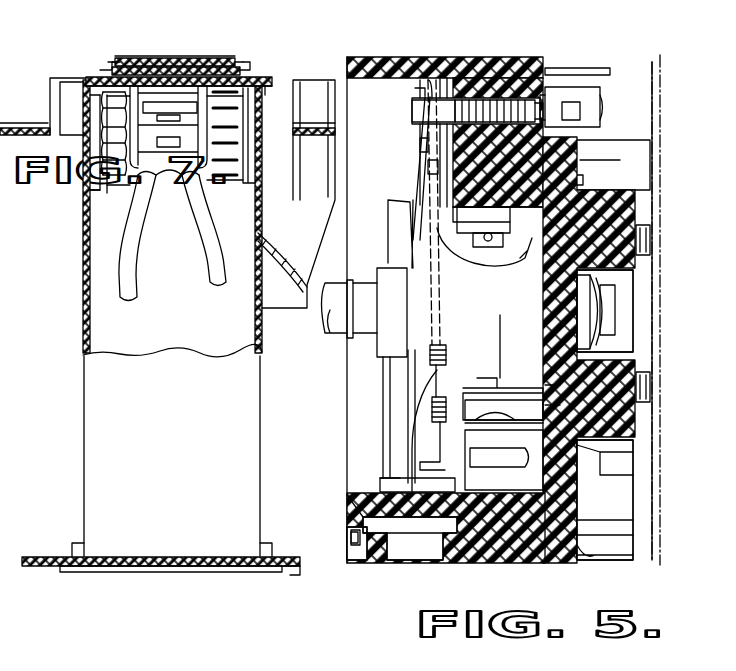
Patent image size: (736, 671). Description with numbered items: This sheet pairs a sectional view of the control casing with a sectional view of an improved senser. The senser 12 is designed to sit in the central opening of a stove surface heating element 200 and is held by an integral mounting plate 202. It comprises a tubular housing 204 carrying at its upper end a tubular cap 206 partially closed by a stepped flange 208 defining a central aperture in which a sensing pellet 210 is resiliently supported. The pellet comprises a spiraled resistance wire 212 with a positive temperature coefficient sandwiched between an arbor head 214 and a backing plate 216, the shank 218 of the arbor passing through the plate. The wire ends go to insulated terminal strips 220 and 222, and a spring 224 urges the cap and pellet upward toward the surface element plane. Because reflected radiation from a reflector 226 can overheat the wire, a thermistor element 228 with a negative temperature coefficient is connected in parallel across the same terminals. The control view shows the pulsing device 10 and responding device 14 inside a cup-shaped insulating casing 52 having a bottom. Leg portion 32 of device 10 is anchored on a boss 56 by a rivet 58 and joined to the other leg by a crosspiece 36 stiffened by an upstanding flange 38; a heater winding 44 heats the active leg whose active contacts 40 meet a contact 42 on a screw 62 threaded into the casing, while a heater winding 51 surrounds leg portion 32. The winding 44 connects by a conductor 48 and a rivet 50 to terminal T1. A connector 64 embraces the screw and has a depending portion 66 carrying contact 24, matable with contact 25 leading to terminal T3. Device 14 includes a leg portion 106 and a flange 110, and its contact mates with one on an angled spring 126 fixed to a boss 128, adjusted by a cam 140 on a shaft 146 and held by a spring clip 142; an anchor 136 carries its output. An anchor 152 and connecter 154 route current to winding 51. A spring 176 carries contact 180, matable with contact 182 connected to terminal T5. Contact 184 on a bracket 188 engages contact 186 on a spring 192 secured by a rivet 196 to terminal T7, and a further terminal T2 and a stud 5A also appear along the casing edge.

In FIG. 7, the senser 12 is at (184, 44).
In FIG. 7, the stove surface heating element 200 is at (311, 133).
In FIG. 7, the mounting plate 202 is at (292, 573).
In FIG. 7, the tubular housing 204 is at (86, 356).
In FIG. 7, the tubular cap 206 is at (73, 167).
In FIG. 7, the stepped flange 208 is at (112, 72).
In FIG. 7, the sensing pellet 210 is at (203, 58).
In FIG. 7, the spiraled resistance wire 212 is at (151, 70).
In FIG. 7, the arbor head 214 is at (142, 40).
In FIG. 7, the backing plate 216 is at (207, 74).
In FIG. 7, the shank 218 is at (160, 117).
In FIG. 7, the terminal strip 220 is at (190, 128).
In FIG. 7, the terminal strip 222 is at (278, 82).
In FIG. 7, the spring 224 is at (266, 76).
In FIG. 7, the reflector 226 is at (292, 255).
In FIG. 7, the thermistor element 228 is at (171, 144).
In FIG. 5, the pulsing device 10 is at (444, 327).
In FIG. 5, the responding device 14 is at (415, 460).
In FIG. 5, the contact 24 is at (508, 215).
In FIG. 5, the contact 25 is at (485, 250).
In FIG. 5, the leg portion 32 is at (420, 160).
In FIG. 5, the crosspiece 36 is at (436, 380).
In FIG. 5, the upstanding flange 38 is at (400, 402).
In FIG. 5, the active contacts 40 is at (417, 92).
In FIG. 5, the contact 42 is at (490, 78).
In FIG. 5, the heater winding 44 is at (420, 144).
In FIG. 5, the conductor 48 is at (428, 440).
In FIG. 5, the rivet 50 is at (356, 548).
In FIG. 5, the heater winding 51 is at (425, 176).
In FIG. 5, the insulating casing 52 is at (545, 60).
In FIG. 5, the boss 56 is at (447, 78).
In FIG. 5, the rivet 58 is at (432, 78).
In FIG. 5, the screw 62 is at (522, 78).
In FIG. 5, the connector 64 is at (455, 160).
In FIG. 5, the depending portion 66 is at (468, 202).
In FIG. 5, the leg portion 106 is at (445, 447).
In FIG. 5, the flange 110 is at (440, 470).
In FIG. 5, the angled spring 126 is at (410, 425).
In FIG. 5, the boss 128 is at (378, 470).
In FIG. 5, the anchor 136 is at (652, 390).
In FIG. 5, the cam 140 is at (395, 350).
In FIG. 5, the spring clip 142 is at (385, 380).
In FIG. 5, the shaft 146 is at (362, 318).
In FIG. 5, the anchor 152 is at (652, 241).
In FIG. 5, the connecter 154 is at (530, 260).
In FIG. 5, the spring 176 is at (612, 346).
In FIG. 5, the contact 180 is at (598, 312).
In FIG. 5, the contact 182 is at (590, 290).
In FIG. 5, the contact 184 is at (547, 388).
In FIG. 5, the contact 186 is at (547, 407).
In FIG. 5, the bracket 188 is at (490, 395).
In FIG. 5, the spring 192 is at (505, 490).
In FIG. 5, the rivet 196 is at (595, 463).
In FIG. 5, the terminal stud 5A is at (652, 396).
In FIG. 5, the terminal T1 is at (412, 565).
In FIG. 5, the terminal T2 is at (602, 108).
In FIG. 5, the terminal T3 is at (580, 70).
In FIG. 5, the terminal T5 is at (622, 162).
In FIG. 5, the terminal T7 is at (620, 560).